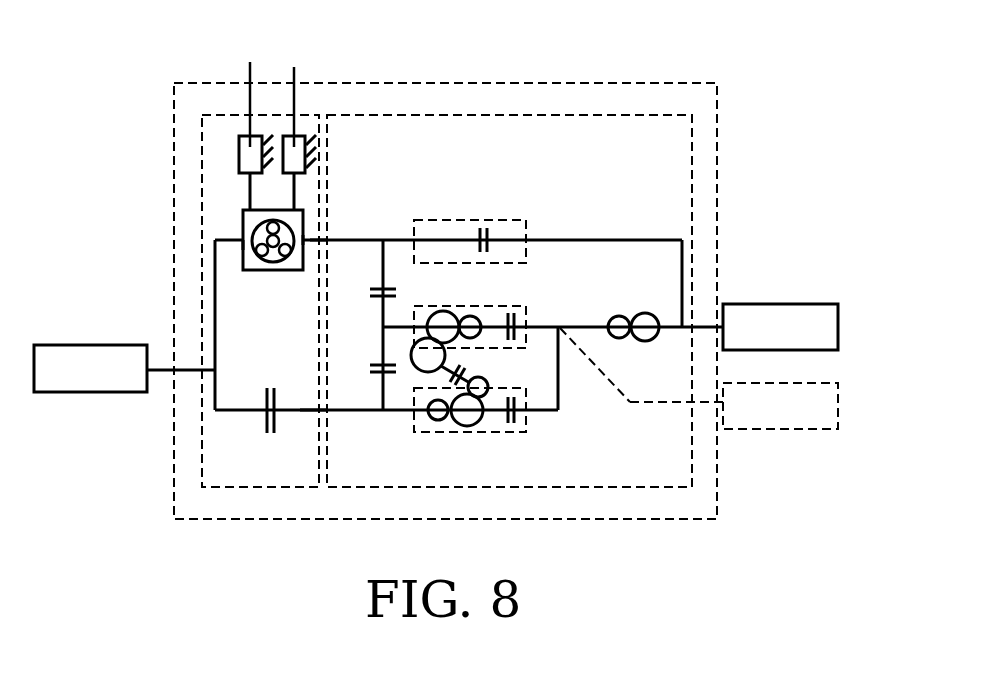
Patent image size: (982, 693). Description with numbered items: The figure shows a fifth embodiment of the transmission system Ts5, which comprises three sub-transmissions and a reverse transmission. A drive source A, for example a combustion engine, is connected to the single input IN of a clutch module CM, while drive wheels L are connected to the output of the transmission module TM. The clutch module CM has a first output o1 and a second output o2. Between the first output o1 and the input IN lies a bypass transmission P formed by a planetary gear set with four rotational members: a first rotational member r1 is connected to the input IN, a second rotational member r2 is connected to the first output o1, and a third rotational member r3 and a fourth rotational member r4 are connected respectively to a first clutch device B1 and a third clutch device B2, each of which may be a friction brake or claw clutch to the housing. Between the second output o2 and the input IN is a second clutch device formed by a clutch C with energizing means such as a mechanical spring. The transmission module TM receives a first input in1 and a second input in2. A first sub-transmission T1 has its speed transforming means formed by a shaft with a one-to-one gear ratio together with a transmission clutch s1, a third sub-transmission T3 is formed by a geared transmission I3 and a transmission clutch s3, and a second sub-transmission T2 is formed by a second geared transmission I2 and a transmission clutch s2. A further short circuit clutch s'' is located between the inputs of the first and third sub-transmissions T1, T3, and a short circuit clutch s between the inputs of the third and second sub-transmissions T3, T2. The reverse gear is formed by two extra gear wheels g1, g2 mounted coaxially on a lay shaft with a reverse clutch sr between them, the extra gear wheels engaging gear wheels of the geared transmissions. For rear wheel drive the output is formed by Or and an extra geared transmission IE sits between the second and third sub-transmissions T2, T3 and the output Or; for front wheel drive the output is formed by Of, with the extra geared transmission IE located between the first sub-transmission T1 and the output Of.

The transmission system Ts5 is at (173, 82).
The clutch module CM is at (218, 113).
The transmission module TM is at (522, 114).
The first clutch device B1 is at (256, 106).
The third clutch device B2 is at (299, 106).
The bypass transmission P is at (248, 233).
The first rotational member r1 is at (242, 248).
The second rotational member r2 is at (304, 240).
The third rotational member r3 is at (247, 207).
The fourth rotational member r4 is at (293, 207).
The first output o1 is at (319, 243).
The second output o2 is at (316, 412).
The first input in1 is at (330, 240).
The second input in2 is at (329, 411).
The input IN is at (202, 372).
The drive source A is at (91, 372).
The clutch C is at (271, 433).
The further short circuit clutch s'' is at (363, 325).
The short circuit clutch s is at (364, 368).
The first sub-transmission T1 is at (526, 218).
The second sub-transmission T2 is at (525, 432).
The third sub-transmission T3 is at (526, 306).
The transmission clutch s1 is at (483, 226).
The transmission clutch s2 is at (513, 433).
The transmission clutch s3 is at (513, 308).
The second geared transmission I2 is at (449, 427).
The geared transmission I3 is at (460, 311).
The extra gear wheel g1 is at (421, 358).
The extra gear wheel g2 is at (488, 385).
The reverse clutch sr is at (448, 373).
The extra geared transmission IE is at (630, 314).
The output Or is at (692, 325).
The output Of is at (560, 328).
The drive wheels L is at (786, 322).